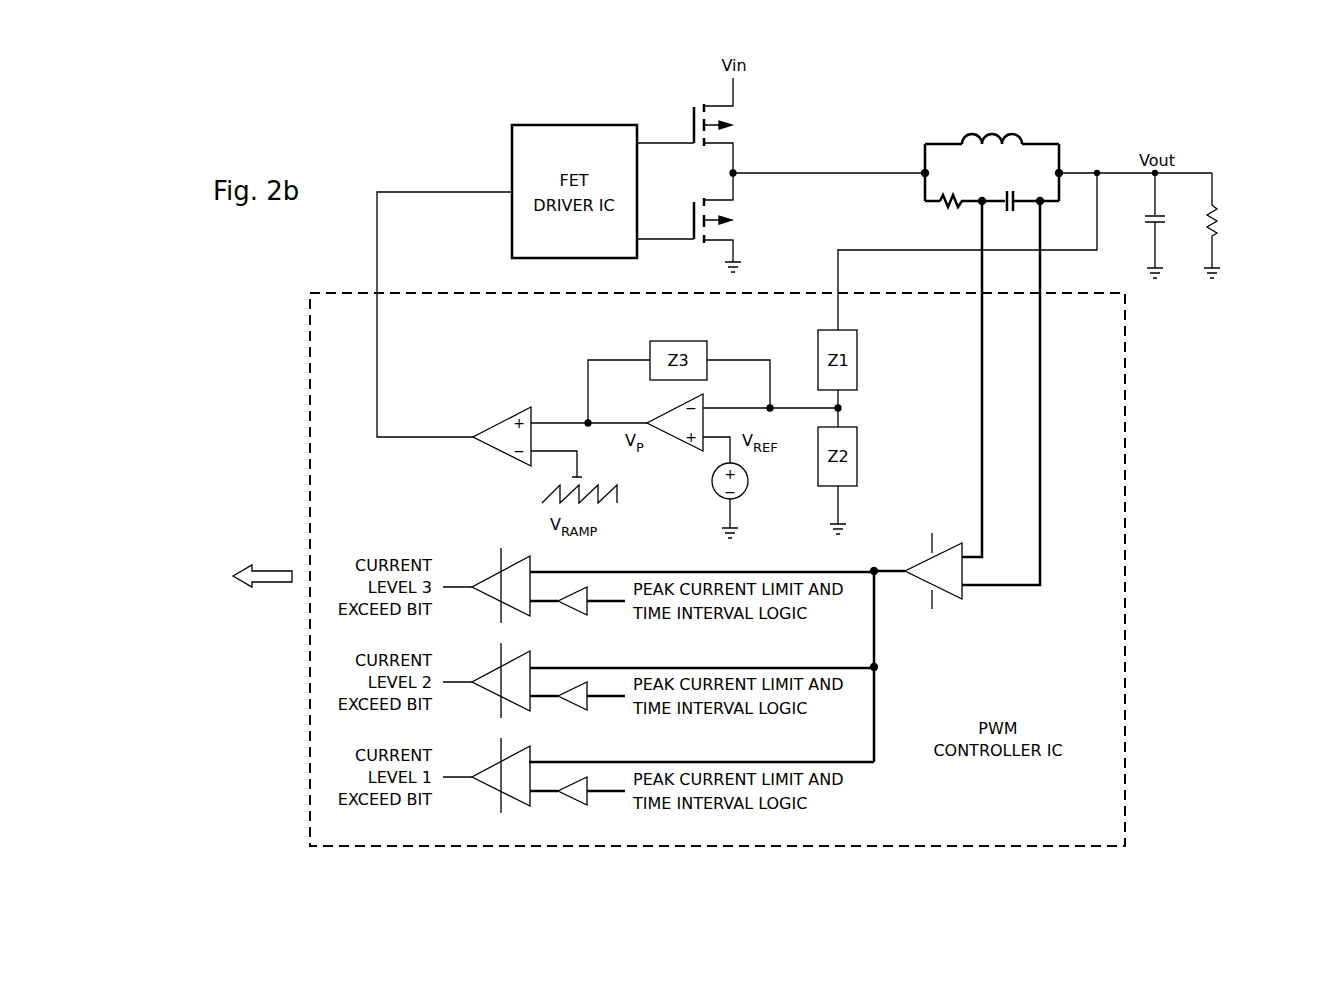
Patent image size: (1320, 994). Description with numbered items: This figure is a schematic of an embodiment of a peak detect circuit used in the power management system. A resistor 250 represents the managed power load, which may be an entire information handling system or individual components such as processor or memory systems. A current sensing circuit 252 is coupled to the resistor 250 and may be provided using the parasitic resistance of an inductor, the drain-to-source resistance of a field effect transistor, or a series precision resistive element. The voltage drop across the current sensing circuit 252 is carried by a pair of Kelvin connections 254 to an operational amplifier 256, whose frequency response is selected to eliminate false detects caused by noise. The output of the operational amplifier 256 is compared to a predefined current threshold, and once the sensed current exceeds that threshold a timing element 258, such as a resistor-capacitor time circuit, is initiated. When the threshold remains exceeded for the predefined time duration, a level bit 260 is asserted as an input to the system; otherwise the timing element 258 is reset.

The resistor 250 is at (1218, 218).
The current sensing circuit 252 is at (1000, 127).
The Kelvin connections 254 is at (981, 381).
The operational amplifier 256 is at (947, 598).
The timing element 258 is at (604, 604).
The level bit 260 is at (272, 583).